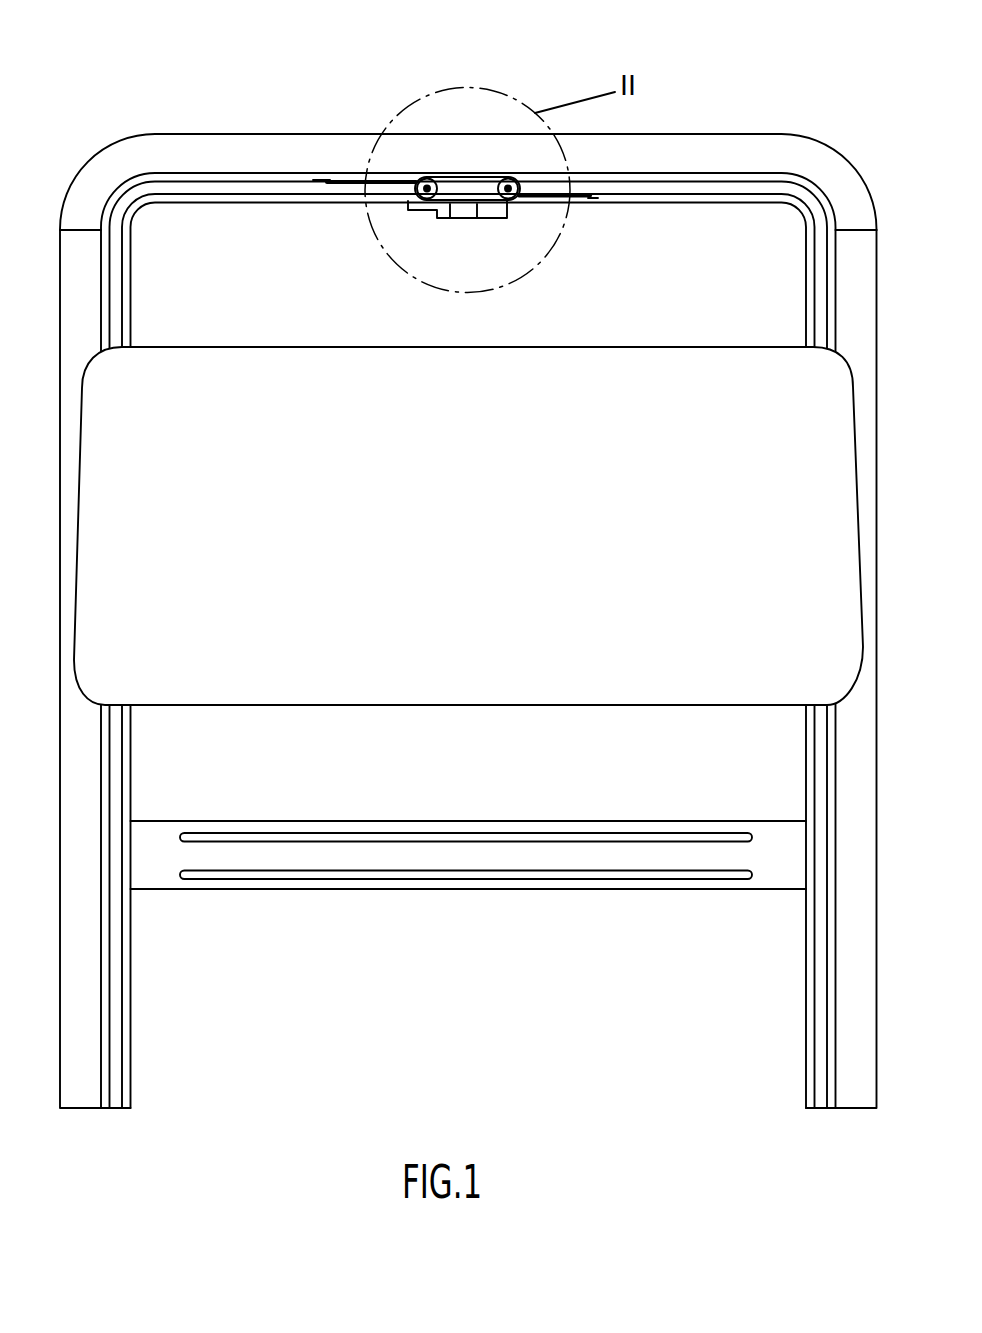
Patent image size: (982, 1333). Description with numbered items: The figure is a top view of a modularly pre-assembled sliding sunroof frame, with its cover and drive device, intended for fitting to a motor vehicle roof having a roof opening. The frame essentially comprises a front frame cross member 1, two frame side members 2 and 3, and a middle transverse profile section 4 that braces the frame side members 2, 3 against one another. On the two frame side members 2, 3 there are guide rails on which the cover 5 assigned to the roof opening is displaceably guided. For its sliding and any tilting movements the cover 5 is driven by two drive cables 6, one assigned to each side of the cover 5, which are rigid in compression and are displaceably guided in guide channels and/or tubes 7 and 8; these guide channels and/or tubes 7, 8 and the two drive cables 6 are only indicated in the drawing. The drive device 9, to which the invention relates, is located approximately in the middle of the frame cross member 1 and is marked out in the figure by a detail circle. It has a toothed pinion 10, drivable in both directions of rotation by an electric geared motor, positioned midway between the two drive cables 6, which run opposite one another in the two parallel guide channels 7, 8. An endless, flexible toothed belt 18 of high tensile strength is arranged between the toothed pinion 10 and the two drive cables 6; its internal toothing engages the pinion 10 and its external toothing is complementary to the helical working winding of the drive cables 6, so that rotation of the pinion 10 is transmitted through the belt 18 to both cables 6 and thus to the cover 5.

The front frame cross member 1 is at (229, 103).
The frame side member 2 is at (147, 988).
The frame side member 3 is at (780, 974).
The middle transverse profile section 4 is at (450, 858).
The cover 5 is at (465, 522).
The drive cable 6 is at (338, 181).
The guide channel and/or tube 7 is at (718, 175).
The guide channel and/or tube 8 is at (708, 203).
The drive device 9 is at (482, 147).
The toothed pinion 10 is at (443, 190).
The toothed belt 18 is at (473, 212).